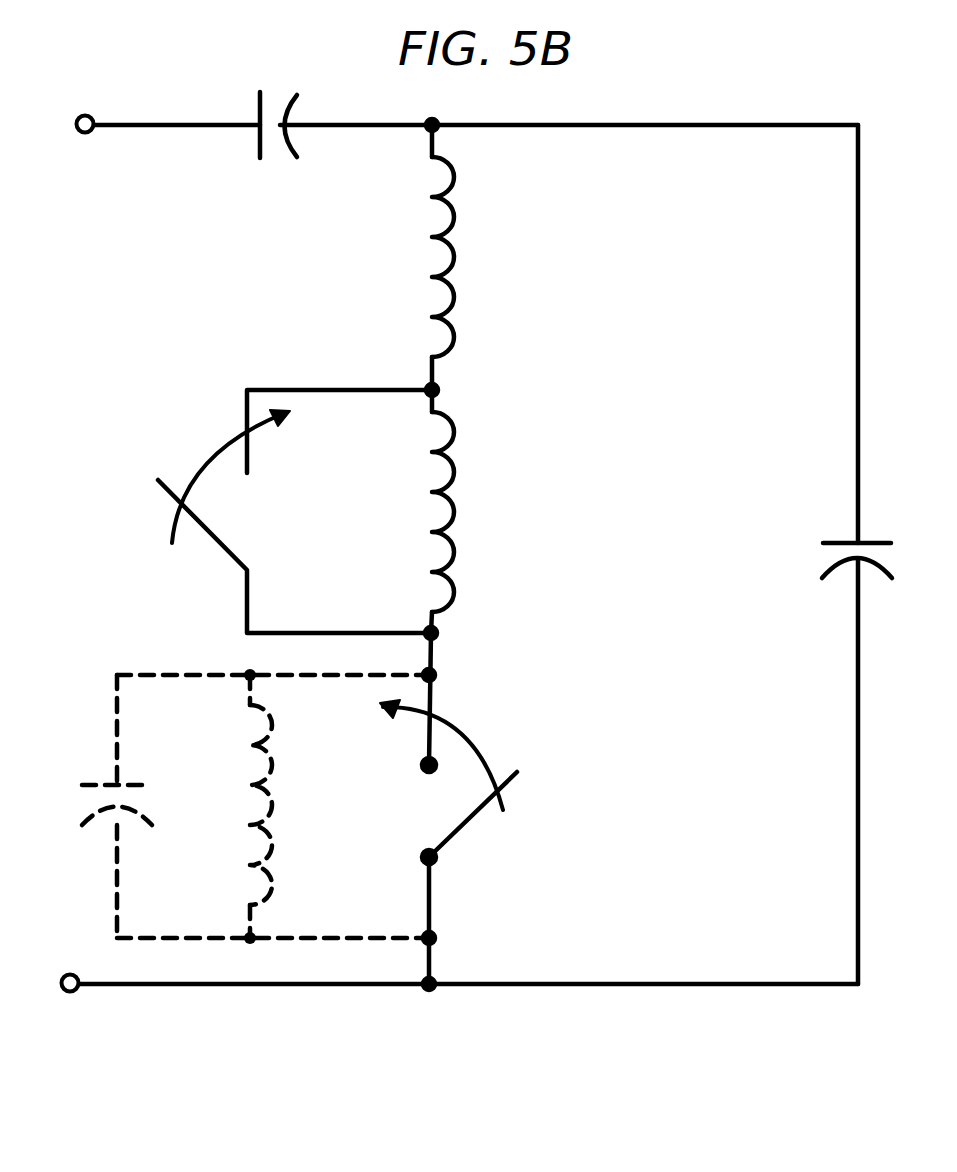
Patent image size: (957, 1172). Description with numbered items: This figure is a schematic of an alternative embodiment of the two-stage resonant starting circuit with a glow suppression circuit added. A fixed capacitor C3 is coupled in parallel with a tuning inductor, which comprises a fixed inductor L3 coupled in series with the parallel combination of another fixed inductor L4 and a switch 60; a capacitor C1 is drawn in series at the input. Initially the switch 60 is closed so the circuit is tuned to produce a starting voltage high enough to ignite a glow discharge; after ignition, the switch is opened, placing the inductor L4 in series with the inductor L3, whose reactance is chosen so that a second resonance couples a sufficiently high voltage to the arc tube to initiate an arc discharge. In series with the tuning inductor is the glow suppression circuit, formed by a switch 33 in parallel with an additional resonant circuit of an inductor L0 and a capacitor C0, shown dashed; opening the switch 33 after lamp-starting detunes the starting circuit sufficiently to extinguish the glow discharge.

The switch 60 is at (217, 547).
The switch 33 is at (443, 843).
The capacitor C1 is at (277, 158).
The fixed inductor L3 is at (466, 257).
The fixed inductor L4 is at (466, 512).
The fixed capacitor C3 is at (832, 556).
The additional resonant circuit capacitor C0 is at (134, 809).
The additional resonant circuit inductor L0 is at (282, 805).